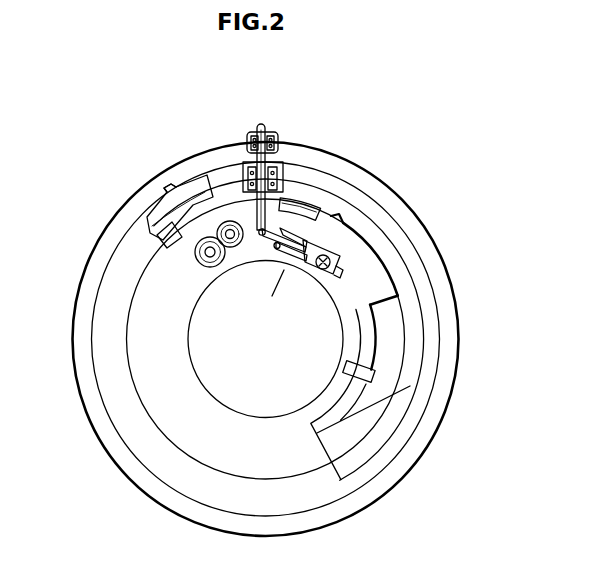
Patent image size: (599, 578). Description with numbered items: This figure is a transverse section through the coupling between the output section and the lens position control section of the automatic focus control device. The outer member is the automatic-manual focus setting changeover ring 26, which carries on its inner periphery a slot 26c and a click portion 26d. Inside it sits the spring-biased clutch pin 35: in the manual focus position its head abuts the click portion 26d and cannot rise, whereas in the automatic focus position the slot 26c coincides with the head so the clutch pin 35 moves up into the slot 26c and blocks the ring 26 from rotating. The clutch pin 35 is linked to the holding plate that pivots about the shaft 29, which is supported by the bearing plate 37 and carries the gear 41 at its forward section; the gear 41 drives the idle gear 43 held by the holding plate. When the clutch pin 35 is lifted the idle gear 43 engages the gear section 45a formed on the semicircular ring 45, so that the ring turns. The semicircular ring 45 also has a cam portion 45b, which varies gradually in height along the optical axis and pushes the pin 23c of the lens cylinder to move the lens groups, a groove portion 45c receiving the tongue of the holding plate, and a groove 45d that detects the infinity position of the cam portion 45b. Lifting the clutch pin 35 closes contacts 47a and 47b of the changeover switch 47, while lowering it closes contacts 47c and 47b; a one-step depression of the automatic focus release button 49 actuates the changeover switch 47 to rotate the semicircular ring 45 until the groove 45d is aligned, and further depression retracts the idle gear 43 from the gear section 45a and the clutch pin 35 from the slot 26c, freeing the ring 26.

The automatic-manual focus setting changeover ring 26 is at (398, 186).
The slot 26c is at (248, 140).
The click portion 26d is at (171, 185).
The automatic focus release button 49 is at (262, 128).
The clutch pin 35 is at (317, 200).
The semicircular ring 45 is at (387, 310).
The gear section 45a is at (345, 190).
The cam portion 45b is at (330, 417).
The groove portion 45c is at (318, 218).
The groove 45d is at (160, 232).
The changeover switch 47 is at (333, 253).
The contact 47a is at (305, 275).
The contact 47b is at (270, 250).
The contact 47c is at (272, 296).
The pin 23c is at (383, 372).
The bearing plate 37 is at (170, 213).
The shaft 29 is at (205, 257).
The gear 41 is at (208, 262).
The idle gear 43 is at (237, 258).